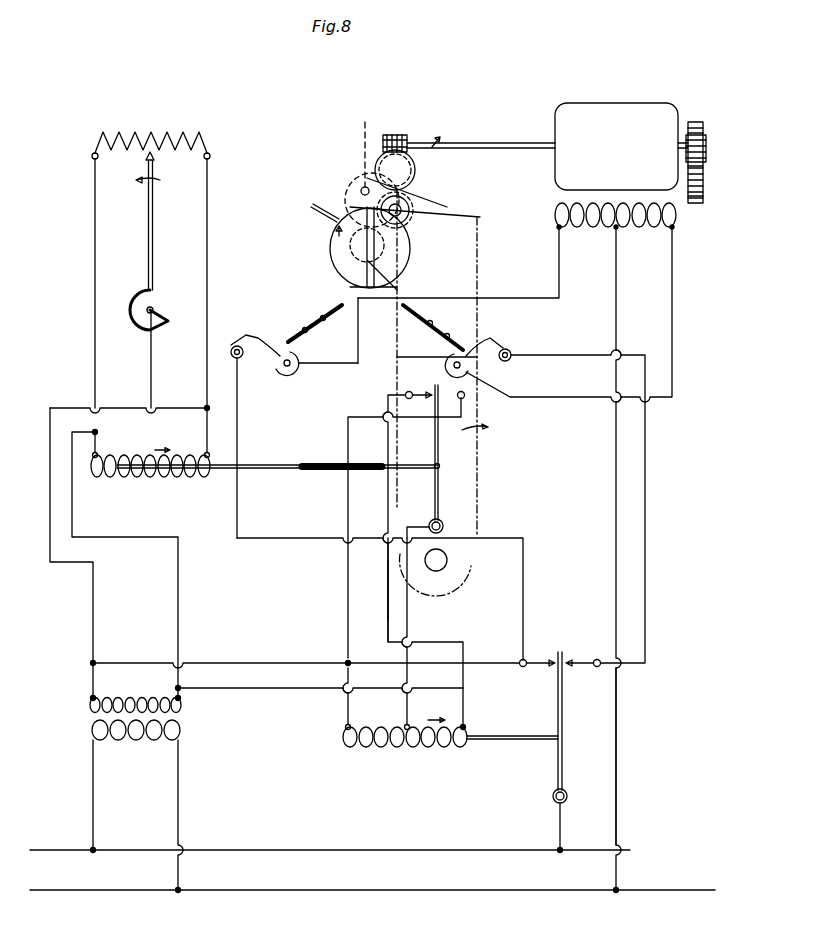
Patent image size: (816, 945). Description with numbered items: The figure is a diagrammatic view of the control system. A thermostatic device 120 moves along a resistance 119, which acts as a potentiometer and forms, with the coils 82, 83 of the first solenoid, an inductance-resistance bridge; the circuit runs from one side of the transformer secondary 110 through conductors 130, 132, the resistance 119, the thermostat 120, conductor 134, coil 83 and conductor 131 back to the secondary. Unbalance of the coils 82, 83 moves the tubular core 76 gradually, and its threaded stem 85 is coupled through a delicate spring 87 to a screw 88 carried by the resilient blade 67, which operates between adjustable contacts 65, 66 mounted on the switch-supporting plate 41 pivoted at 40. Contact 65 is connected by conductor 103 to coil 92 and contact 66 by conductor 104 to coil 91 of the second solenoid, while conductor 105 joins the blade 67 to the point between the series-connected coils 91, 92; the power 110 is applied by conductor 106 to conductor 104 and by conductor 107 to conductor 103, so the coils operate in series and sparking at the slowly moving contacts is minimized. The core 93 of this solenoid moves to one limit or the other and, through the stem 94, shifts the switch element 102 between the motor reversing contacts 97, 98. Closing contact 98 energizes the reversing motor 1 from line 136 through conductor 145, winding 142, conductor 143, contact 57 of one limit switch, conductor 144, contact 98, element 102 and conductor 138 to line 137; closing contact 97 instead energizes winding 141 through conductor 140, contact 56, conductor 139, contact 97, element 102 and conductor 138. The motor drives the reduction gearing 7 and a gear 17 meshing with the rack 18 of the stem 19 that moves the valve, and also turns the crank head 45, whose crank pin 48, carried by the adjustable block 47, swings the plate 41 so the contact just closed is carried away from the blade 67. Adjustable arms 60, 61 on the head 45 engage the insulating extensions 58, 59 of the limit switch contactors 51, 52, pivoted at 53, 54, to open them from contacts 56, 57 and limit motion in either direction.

The reversing motor 1 is at (605, 118).
The reduction gearing 7 is at (415, 170).
The gear 17 is at (700, 140).
The rack 18 is at (703, 170).
The stem 19 is at (705, 195).
The pivot 40 is at (447, 560).
The switch-supporting plate 41 is at (477, 480).
The crank head 45 is at (330, 260).
The crank pin block 47 is at (362, 155).
The crank pin 48 is at (367, 217).
The movable contactor 51 is at (247, 338).
The movable contactor 52 is at (485, 340).
The pivot 53 is at (286, 376).
The pivot 54 is at (452, 359).
The contact 56 is at (240, 358).
The contact 57 is at (513, 346).
The extension 58 is at (328, 306).
The extension 59 is at (428, 312).
The adjustable arm 60 is at (312, 208).
The adjustable arm 61 is at (410, 227).
The adjustable contact 65 is at (430, 393).
The adjustable contact 66 is at (442, 393).
The flexible blade 67 is at (440, 447).
The tubular core 76 is at (152, 478).
The coil 82 is at (118, 478).
The coil 83 is at (191, 478).
The threaded stem 85 is at (274, 464).
The spring 87 is at (328, 464).
The screw 88 is at (413, 464).
The coil 91 is at (352, 750).
The coil 92 is at (450, 750).
The core 93 is at (408, 750).
The stem 94 is at (500, 735).
The motor reversing contact 97 is at (556, 660).
The motor reversing contact 98 is at (566, 658).
The switch element 102 is at (563, 718).
The conductor 103 is at (388, 615).
The conductor 104 is at (348, 590).
The conductor 105 is at (410, 620).
The conductor 106 is at (136, 660).
The conductor 107 is at (270, 688).
The transformer secondary 110 is at (136, 786).
The resistance 119 is at (172, 132).
The thermostatic device 120 is at (148, 243).
The conductor 130 is at (179, 622).
The conductor 131 is at (207, 426).
The conductor 132 is at (94, 343).
The conductor 134 is at (152, 372).
The line 136 is at (470, 890).
The line 137 is at (482, 850).
The conductor 138 is at (561, 823).
The conductor 139 is at (296, 538).
The conductor 140 is at (338, 366).
The motor winding 141 is at (592, 228).
The motor winding 142 is at (634, 228).
The conductor 143 is at (673, 318).
The conductor 144 is at (576, 356).
The conductor 145 is at (617, 770).